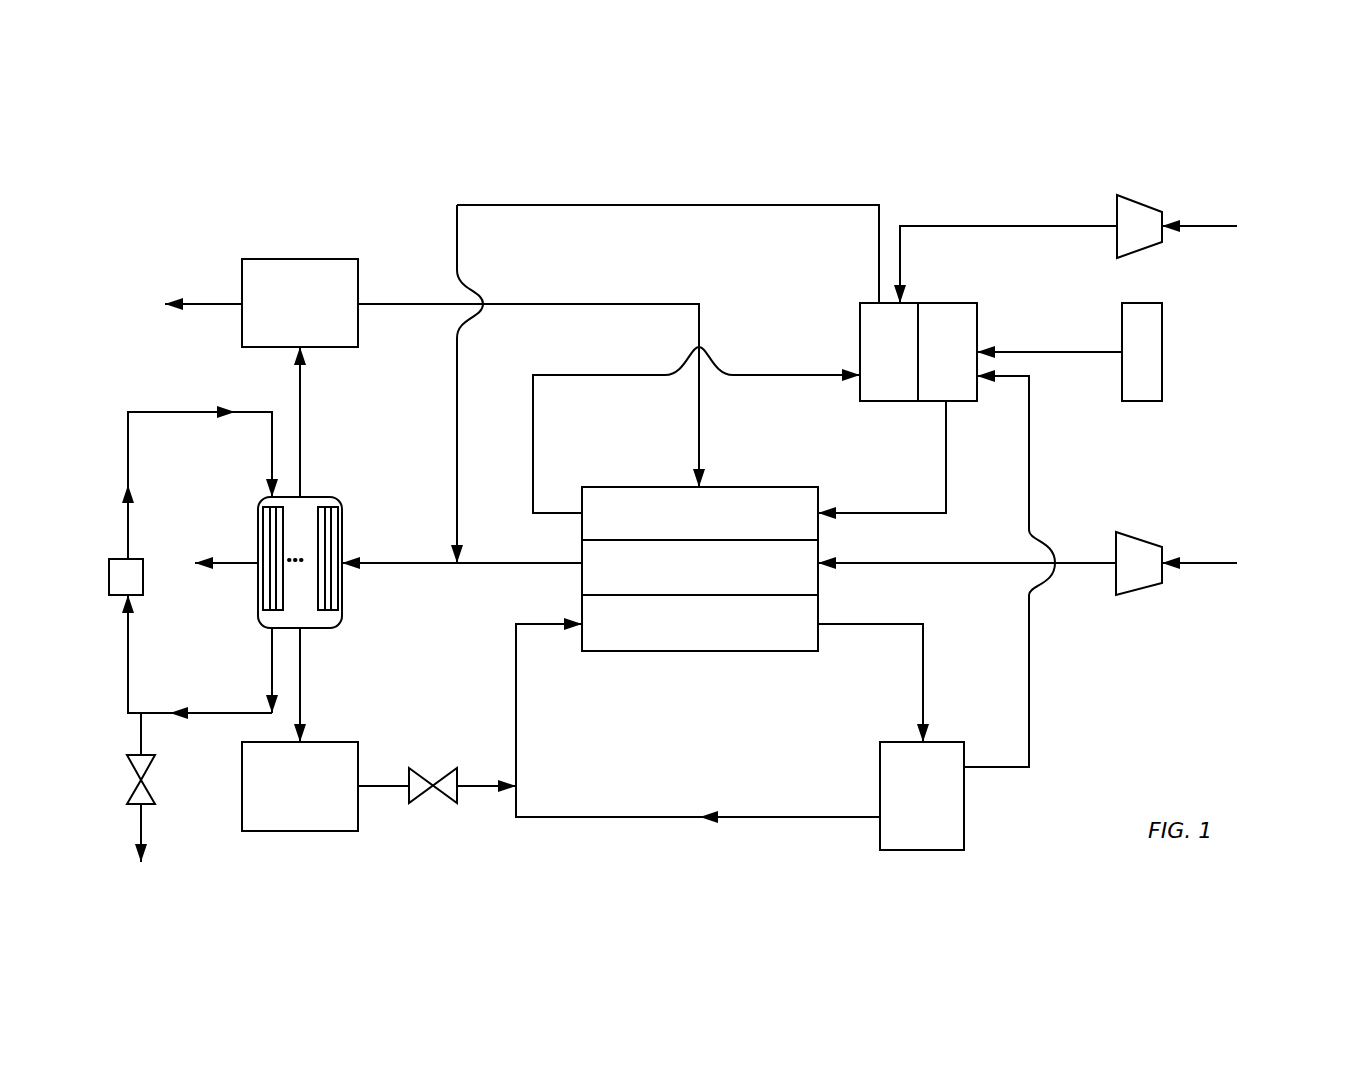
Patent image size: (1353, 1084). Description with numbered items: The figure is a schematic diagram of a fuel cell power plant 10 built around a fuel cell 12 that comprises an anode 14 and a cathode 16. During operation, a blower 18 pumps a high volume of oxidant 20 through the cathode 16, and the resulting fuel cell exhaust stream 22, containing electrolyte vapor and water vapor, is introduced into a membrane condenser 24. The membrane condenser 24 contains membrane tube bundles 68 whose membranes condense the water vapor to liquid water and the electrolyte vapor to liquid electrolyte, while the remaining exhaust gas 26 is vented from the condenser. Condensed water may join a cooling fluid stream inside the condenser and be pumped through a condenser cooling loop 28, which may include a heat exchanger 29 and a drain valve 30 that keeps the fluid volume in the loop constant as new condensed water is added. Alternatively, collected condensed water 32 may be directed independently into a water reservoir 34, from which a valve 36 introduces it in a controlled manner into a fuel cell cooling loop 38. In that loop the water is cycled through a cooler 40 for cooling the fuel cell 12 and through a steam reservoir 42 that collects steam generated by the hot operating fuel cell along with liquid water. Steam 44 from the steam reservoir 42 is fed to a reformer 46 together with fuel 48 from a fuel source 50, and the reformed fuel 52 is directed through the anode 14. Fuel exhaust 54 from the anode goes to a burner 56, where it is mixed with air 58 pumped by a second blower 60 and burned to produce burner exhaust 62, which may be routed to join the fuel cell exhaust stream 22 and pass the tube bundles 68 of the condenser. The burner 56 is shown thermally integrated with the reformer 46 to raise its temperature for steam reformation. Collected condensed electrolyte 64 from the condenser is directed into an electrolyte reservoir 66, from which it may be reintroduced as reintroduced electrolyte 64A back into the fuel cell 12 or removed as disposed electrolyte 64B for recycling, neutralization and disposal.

The fuel cell power plant 10 is at (1195, 158).
The fuel cell 12 is at (772, 466).
The anode 14 is at (700, 513).
The cathode 16 is at (700, 567).
The cooler 40 is at (700, 623).
The blower 18 is at (1138, 540).
The oxidant 20 is at (945, 565).
The fuel cell exhaust stream 22 is at (512, 564).
The membrane condenser 24 is at (332, 499).
The membrane tube bundles 68 is at (270, 553).
The exhaust gas 26 is at (240, 565).
The condenser cooling loop 28 is at (128, 457).
The heat exchanger 29 is at (109, 577).
The drain valve 30 is at (133, 772).
The collected condensed water 32 is at (305, 690).
The water reservoir 34 is at (300, 786).
The valve 36 is at (432, 784).
The fuel cell cooling loop 38 is at (567, 818).
The steam reservoir 42 is at (922, 796).
The steam 44 is at (1029, 705).
The reformer 46 is at (947, 352).
The burner 56 is at (889, 352).
The fuel 48 is at (1053, 352).
The fuel source 50 is at (1142, 352).
The reformed fuel 52 is at (946, 500).
The fuel exhaust 54 is at (533, 450).
The air 58 is at (1011, 226).
The blower 60 is at (1132, 202).
The burner exhaust 62 is at (701, 205).
The collected condensed electrolyte 64 is at (300, 446).
The reintroduced electrolyte 64A is at (522, 304).
The disposed electrolyte 64B is at (211, 304).
The electrolyte reservoir 66 is at (300, 303).